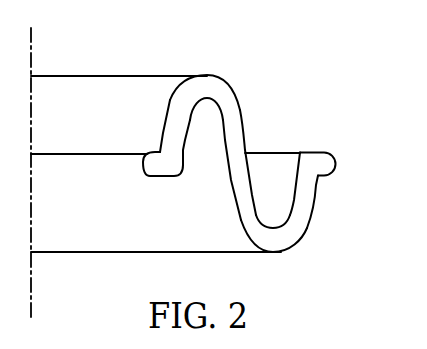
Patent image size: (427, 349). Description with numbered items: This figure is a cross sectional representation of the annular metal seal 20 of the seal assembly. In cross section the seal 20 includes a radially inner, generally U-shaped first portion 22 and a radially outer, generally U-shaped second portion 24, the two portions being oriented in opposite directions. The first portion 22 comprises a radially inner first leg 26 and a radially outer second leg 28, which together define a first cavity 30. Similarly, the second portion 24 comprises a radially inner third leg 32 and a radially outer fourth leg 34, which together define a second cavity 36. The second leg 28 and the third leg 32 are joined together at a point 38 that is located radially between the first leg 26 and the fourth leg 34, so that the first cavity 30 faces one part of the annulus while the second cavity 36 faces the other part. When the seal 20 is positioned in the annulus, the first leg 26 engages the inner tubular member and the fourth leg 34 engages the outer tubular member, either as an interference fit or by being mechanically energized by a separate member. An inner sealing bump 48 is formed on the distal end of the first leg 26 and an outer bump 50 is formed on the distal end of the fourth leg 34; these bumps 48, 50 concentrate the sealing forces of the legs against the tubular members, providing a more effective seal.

The annular metal seal 20 is at (249, 165).
The first portion 22 is at (213, 67).
The second portion 24 is at (290, 264).
The first leg 26 is at (171, 97).
The second leg 28 is at (233, 92).
The first cavity 30 is at (210, 153).
The third leg 32 is at (234, 216).
The fourth leg 34 is at (316, 210).
The second cavity 36 is at (281, 170).
The point 38 is at (246, 142).
The inner sealing bump 48 is at (146, 167).
The outer bump 50 is at (335, 159).